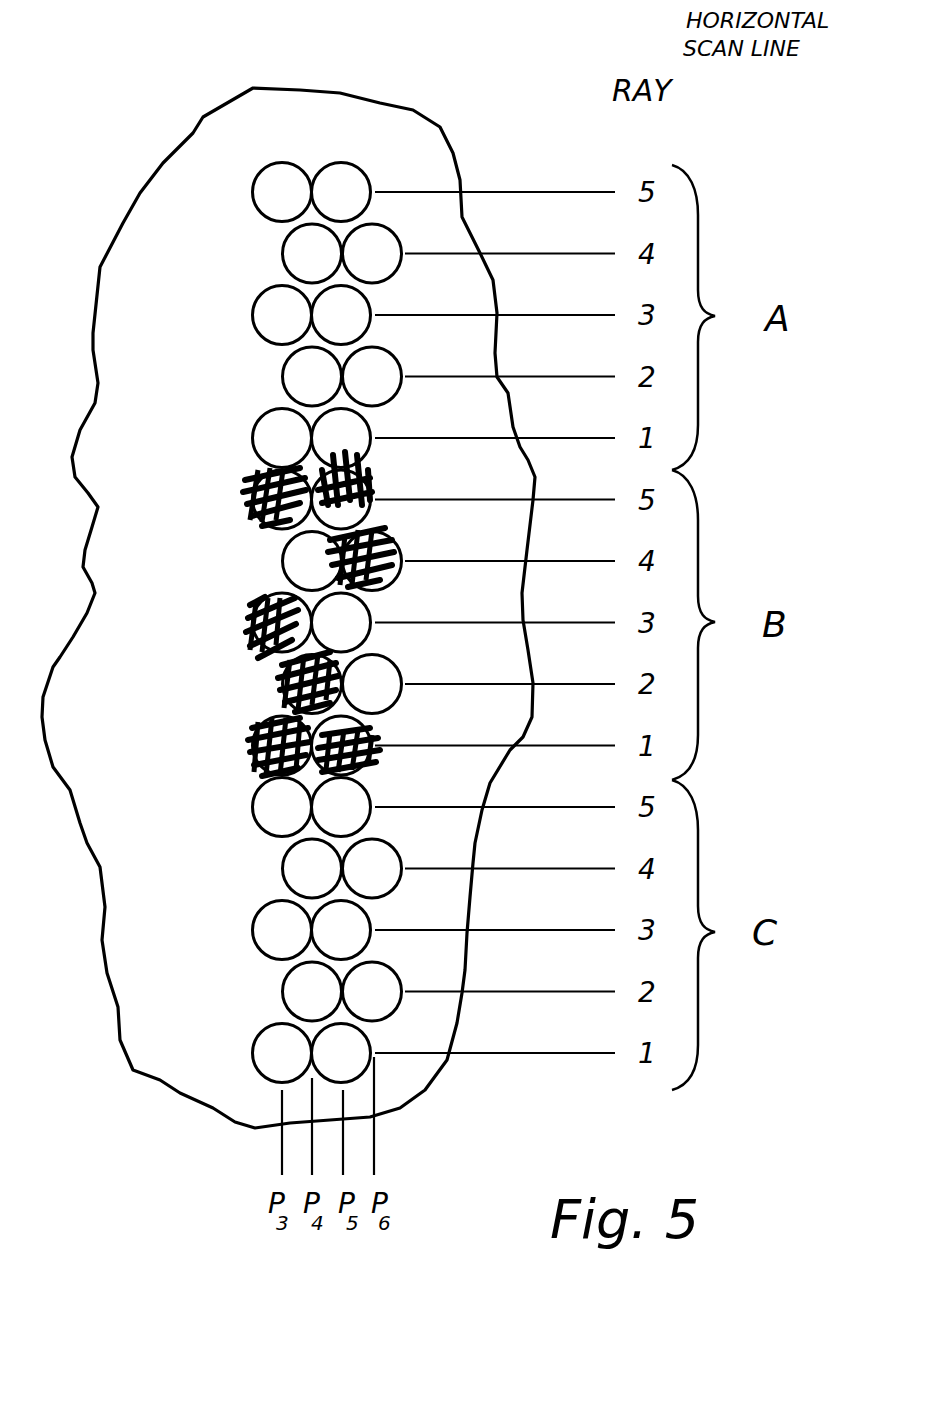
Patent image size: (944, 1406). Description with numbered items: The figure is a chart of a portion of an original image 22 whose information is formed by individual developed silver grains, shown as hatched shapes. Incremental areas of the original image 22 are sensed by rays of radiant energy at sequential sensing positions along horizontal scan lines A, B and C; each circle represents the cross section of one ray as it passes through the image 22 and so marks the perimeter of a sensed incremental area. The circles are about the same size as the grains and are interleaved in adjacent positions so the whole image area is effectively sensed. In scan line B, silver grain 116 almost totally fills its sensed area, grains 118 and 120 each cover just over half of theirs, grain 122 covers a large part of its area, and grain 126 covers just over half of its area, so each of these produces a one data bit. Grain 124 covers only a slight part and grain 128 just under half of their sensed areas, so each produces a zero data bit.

The original image 22 is at (145, 1055).
The silver grain 116 is at (250, 752).
The grain 118 is at (250, 622).
The grain 120 is at (250, 492).
The grain 122 is at (280, 686).
The grain 124 is at (388, 540).
The grain 126 is at (380, 762).
The grain 128 is at (376, 474).